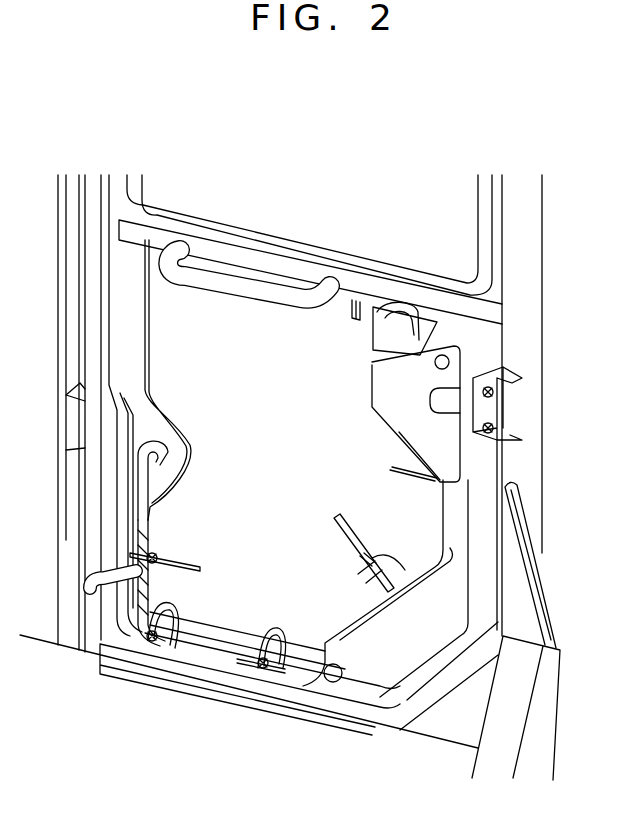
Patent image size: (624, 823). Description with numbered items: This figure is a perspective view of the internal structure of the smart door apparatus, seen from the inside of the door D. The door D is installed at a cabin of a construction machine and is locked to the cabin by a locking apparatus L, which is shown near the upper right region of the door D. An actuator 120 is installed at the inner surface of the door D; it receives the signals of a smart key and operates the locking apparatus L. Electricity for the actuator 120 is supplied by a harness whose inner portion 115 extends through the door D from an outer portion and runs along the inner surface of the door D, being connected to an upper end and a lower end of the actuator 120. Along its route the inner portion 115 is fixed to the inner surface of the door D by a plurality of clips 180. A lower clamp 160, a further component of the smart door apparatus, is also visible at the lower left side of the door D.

The door D is at (338, 252).
The locking apparatus L is at (488, 348).
The actuator 120 is at (455, 540).
The inner portion 115 is at (220, 645).
The lower clamp 160 is at (168, 450).
The clips 180 is at (160, 540).